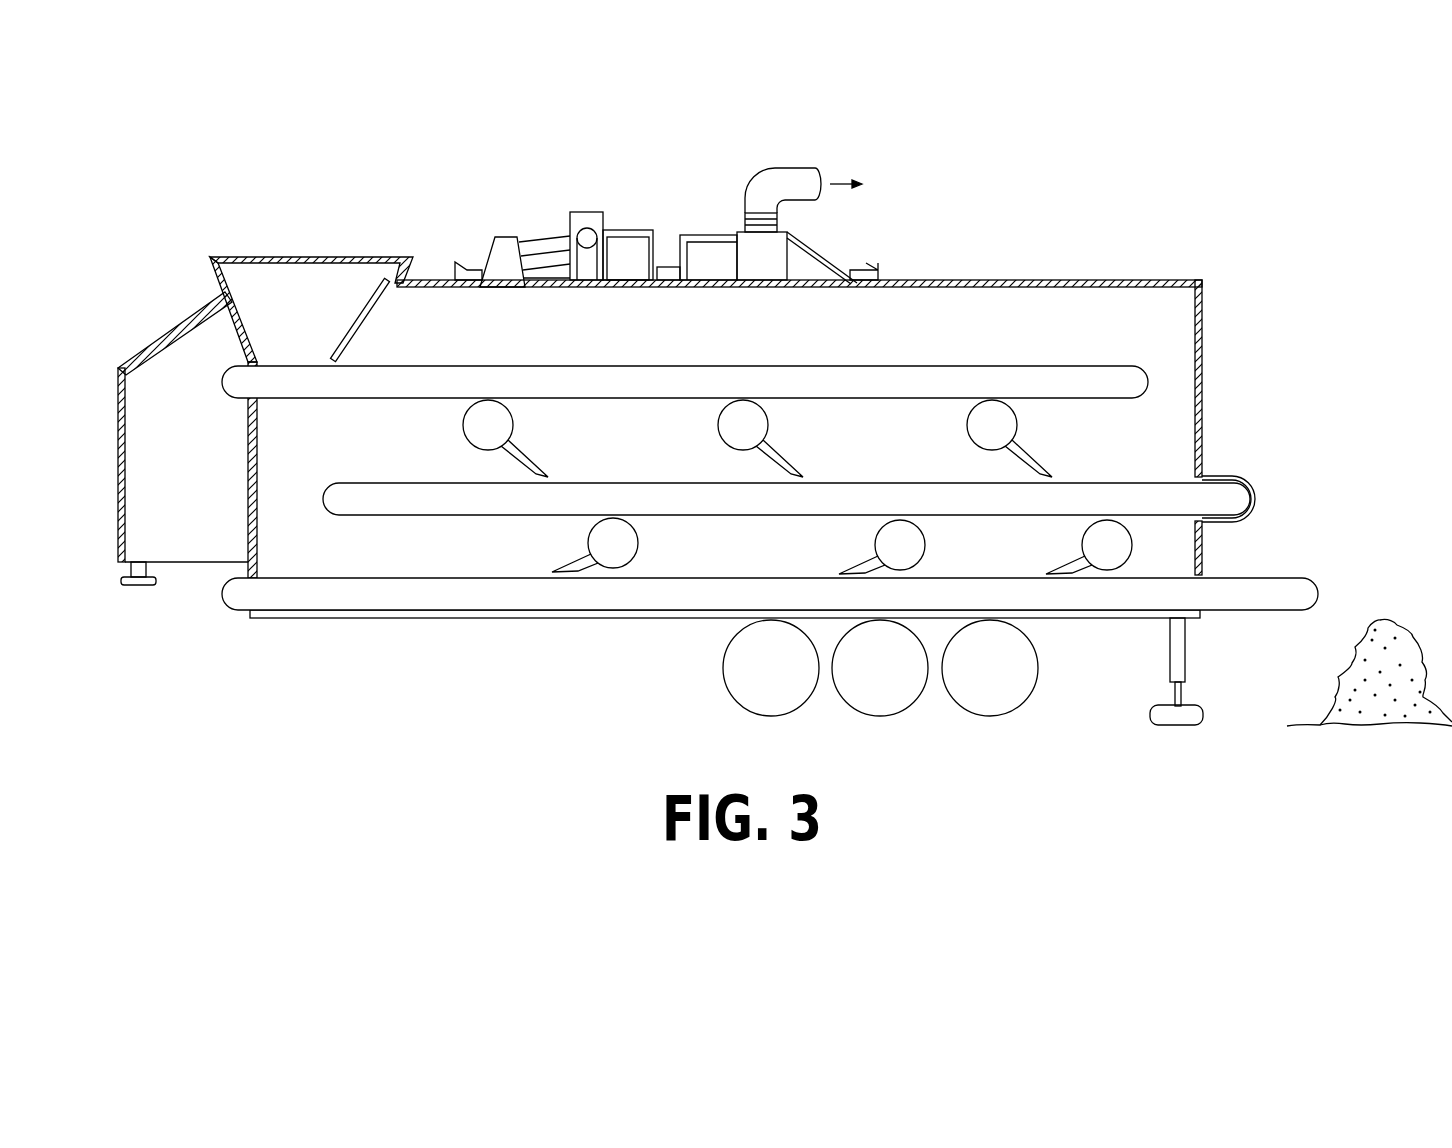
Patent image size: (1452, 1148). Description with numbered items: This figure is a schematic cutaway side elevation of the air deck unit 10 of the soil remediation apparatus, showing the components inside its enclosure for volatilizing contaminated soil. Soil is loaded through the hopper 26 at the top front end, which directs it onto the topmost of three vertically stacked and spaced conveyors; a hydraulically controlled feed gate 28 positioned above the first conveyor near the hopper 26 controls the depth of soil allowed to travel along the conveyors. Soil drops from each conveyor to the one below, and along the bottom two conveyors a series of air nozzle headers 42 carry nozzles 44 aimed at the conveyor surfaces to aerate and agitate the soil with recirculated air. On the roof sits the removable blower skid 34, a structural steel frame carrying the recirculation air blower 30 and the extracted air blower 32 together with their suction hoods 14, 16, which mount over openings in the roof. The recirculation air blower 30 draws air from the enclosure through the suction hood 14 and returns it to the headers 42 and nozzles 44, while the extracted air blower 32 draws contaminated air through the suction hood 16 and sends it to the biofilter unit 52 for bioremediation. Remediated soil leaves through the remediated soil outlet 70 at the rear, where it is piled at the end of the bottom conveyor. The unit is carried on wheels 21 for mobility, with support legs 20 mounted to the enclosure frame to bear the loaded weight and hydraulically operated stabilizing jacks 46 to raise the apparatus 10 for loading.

The air deck unit 10 is at (995, 218).
The suction hood 14 is at (505, 237).
The suction hood 16 is at (808, 258).
The support legs 20 is at (1185, 693).
The wheels 21 is at (1000, 687).
The hopper 26 is at (325, 257).
The feed gate 28 is at (348, 325).
The recirculation air blower 30 is at (630, 228).
The extracted air blower 32 is at (710, 232).
The blower skid 34 is at (858, 272).
The air nozzle header 42 is at (618, 548).
The air nozzles 44 is at (568, 567).
The stabilizing jacks 46 is at (1186, 655).
The biofilter unit 52 is at (895, 182).
The remediated soil outlet 70 is at (1202, 552).